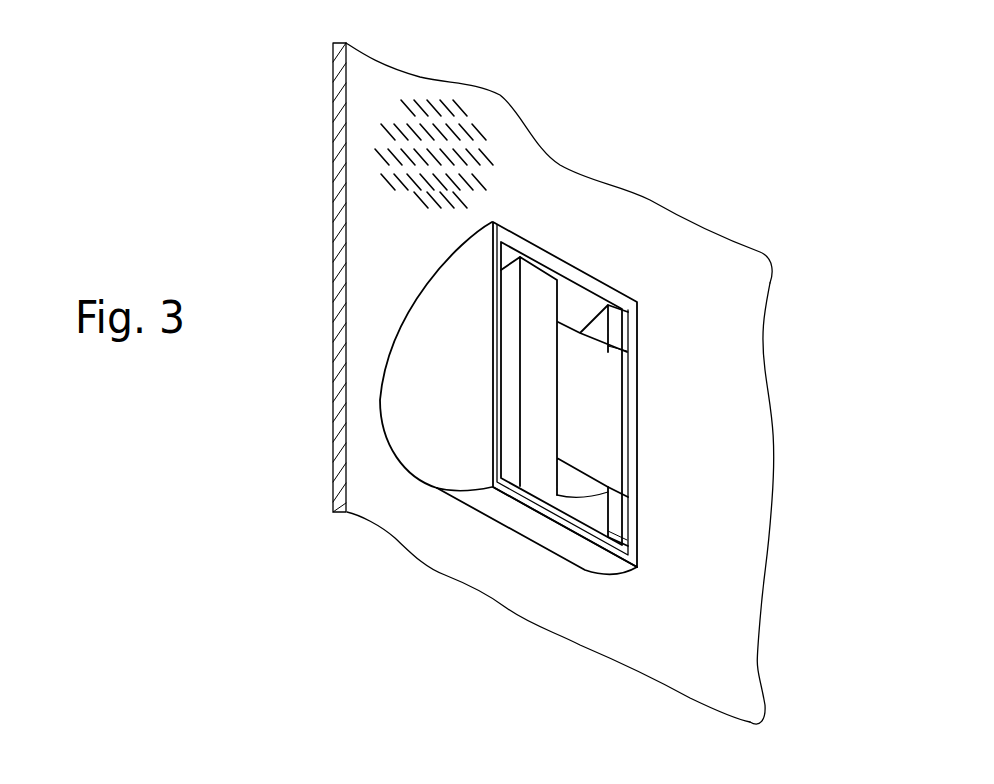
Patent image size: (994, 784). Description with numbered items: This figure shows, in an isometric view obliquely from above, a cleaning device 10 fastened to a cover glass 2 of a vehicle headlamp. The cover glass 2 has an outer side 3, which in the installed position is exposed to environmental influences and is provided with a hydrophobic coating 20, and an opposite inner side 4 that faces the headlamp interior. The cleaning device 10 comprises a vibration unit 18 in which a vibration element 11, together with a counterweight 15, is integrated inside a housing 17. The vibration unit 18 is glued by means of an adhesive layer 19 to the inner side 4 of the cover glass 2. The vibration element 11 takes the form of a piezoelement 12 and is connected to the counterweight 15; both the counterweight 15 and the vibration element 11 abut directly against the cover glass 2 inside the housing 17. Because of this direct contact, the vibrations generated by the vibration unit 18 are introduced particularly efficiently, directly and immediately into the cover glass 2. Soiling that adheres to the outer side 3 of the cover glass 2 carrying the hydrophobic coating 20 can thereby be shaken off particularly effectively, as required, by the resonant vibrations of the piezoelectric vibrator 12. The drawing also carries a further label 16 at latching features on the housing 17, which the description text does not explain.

The cover glass 2 is at (338, 510).
The outer side 3 is at (364, 253).
The inner side 4 is at (333, 257).
The cleaning device 10 is at (282, 477).
The vibration element 11 is at (638, 455).
The piezoelement 12 is at (595, 402).
The counterweight 15 is at (537, 300).
The latching element 16 is at (617, 329).
The housing 17 is at (532, 527).
The vibration unit 18 is at (432, 360).
The adhesive layer 19 is at (630, 352).
The hydrophobic coating 20 is at (557, 190).